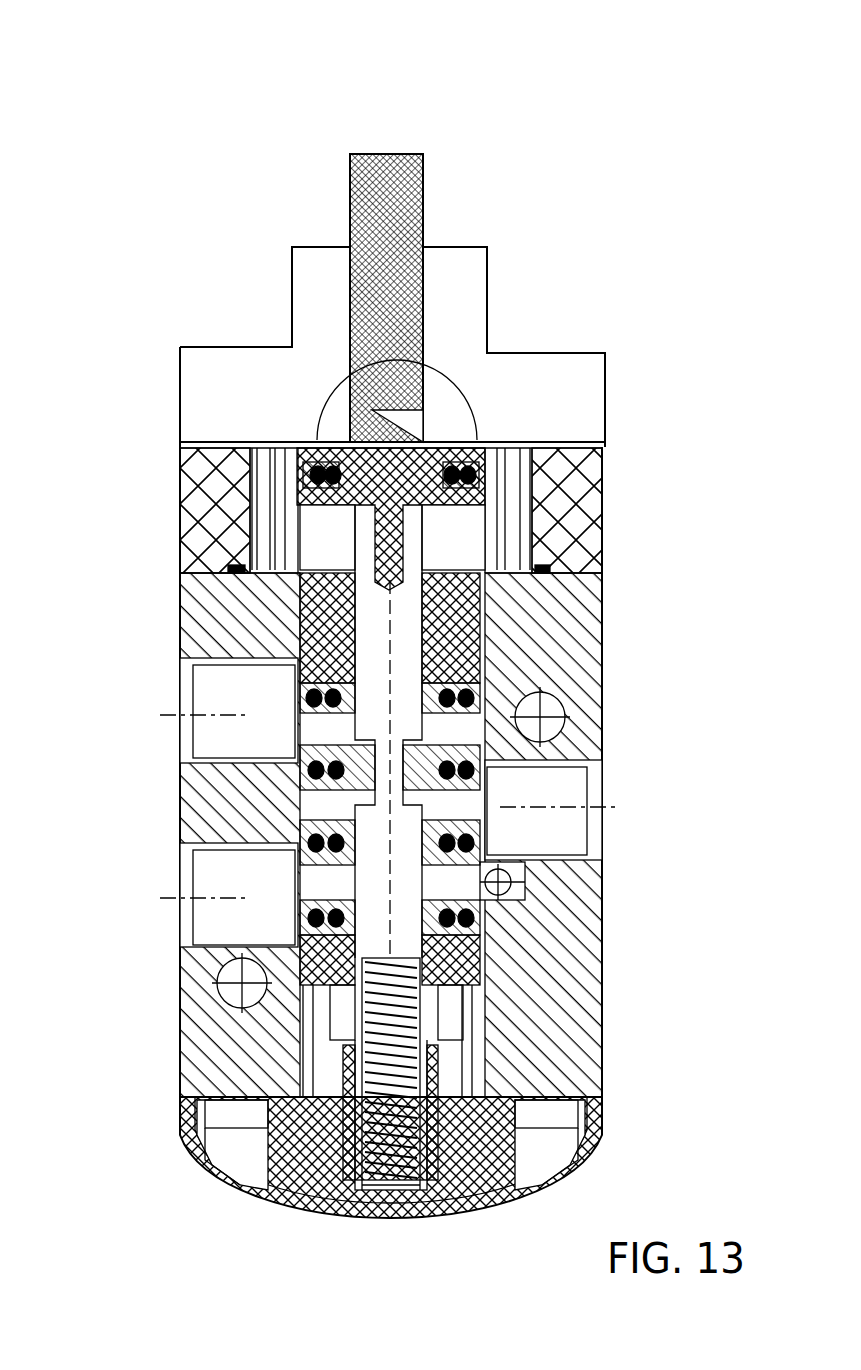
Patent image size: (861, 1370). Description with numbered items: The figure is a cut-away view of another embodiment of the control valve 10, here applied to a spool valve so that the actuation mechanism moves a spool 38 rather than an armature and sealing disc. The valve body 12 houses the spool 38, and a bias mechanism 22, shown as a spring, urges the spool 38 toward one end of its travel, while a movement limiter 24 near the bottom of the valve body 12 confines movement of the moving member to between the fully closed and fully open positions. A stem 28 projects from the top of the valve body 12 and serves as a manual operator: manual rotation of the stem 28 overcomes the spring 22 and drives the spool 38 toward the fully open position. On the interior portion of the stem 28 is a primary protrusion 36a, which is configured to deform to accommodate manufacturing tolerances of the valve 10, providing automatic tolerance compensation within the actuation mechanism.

The control valve 10 is at (96, 93).
The valve body 12 is at (563, 988).
The bias mechanism 22 is at (336, 1023).
The movement limiter 24 is at (297, 1175).
The stem 28 is at (448, 186).
The primary protrusion 36a is at (466, 425).
The spool 38 is at (410, 678).